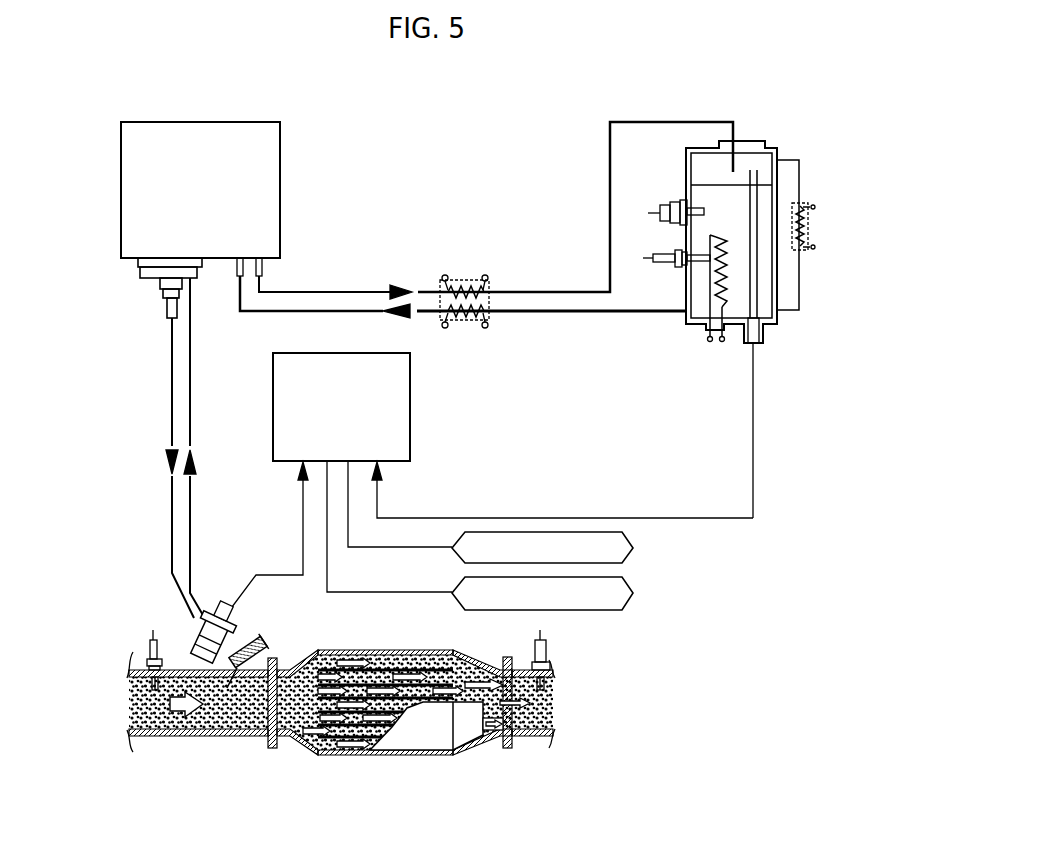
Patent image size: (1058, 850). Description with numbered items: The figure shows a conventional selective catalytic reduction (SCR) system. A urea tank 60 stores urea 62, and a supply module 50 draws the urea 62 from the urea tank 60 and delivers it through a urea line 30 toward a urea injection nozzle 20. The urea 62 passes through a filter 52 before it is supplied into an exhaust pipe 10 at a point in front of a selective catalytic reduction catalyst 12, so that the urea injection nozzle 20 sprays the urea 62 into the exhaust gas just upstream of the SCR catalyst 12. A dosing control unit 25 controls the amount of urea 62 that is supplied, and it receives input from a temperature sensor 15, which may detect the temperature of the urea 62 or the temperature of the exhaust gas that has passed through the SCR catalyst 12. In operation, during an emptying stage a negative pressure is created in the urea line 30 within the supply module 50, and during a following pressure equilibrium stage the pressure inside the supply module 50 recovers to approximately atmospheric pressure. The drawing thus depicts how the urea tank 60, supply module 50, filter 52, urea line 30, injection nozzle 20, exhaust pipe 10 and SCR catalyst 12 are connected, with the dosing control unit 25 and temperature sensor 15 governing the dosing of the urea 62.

The exhaust pipe 10 is at (200, 738).
The selective catalytic reduction catalyst 12 is at (419, 756).
The temperature sensor 15 is at (643, 255).
The urea injection nozzle 20 is at (232, 634).
The dosing control unit 25 is at (410, 405).
The urea line 30 is at (190, 432).
The supply module 50 is at (192, 130).
The filter 52 is at (153, 273).
The urea tank 60 is at (703, 152).
The urea 62 is at (735, 198).